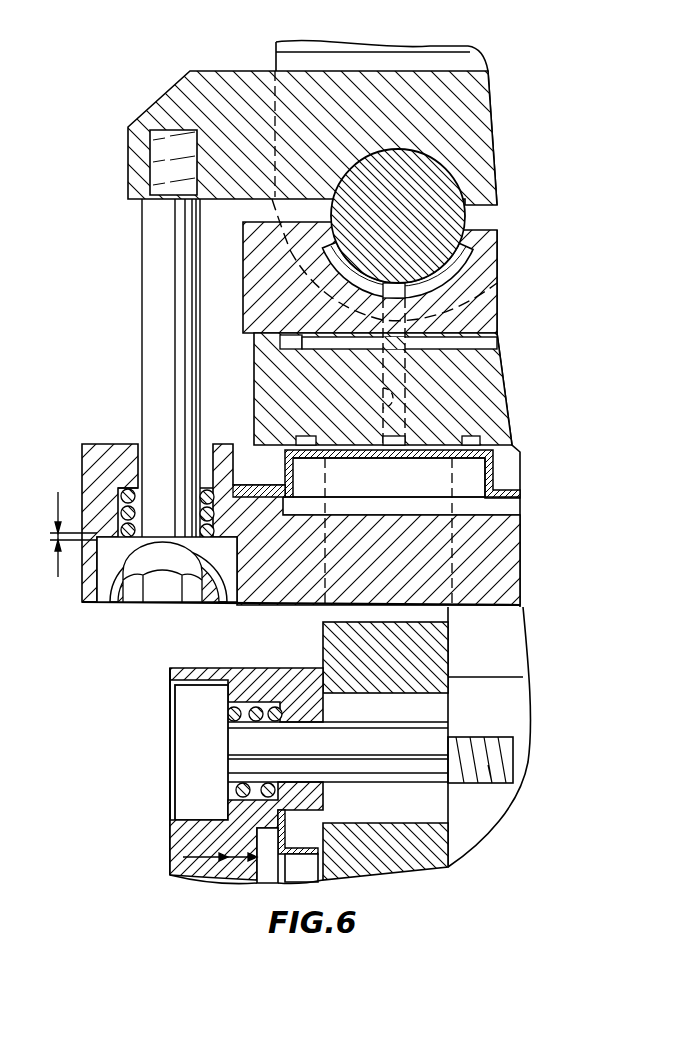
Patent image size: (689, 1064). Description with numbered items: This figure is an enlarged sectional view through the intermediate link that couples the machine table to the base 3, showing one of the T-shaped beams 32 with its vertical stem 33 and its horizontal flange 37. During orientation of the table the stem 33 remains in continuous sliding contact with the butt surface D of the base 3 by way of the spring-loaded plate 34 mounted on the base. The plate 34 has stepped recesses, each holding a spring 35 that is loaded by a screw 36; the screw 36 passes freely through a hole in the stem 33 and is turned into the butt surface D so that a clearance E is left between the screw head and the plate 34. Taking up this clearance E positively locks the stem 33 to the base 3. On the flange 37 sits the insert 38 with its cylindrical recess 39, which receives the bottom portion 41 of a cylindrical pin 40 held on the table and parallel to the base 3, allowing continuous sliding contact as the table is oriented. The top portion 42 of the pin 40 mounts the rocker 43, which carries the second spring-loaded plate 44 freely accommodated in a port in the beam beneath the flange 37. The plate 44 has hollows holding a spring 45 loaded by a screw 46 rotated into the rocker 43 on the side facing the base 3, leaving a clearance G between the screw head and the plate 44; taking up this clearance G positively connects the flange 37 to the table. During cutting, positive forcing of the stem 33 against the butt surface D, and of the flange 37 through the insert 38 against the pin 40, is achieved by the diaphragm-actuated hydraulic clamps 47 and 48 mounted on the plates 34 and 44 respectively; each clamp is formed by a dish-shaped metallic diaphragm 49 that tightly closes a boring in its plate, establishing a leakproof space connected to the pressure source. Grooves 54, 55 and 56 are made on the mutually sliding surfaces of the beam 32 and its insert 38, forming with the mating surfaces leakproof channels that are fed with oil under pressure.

The base 3 is at (512, 722).
The T-shaped beam 32 is at (435, 655).
The vertical portion (stem) 33 is at (450, 838).
The spring-loaded plate 34 is at (285, 682).
The spring 35 is at (262, 726).
The screw 36 is at (238, 762).
The horizontal portion (flange) 37 is at (473, 336).
The insert 38 is at (267, 302).
The cylindrical recess 39 is at (465, 226).
The cylindrical pin 40 is at (452, 196).
The bottom portion of pin 41 is at (492, 278).
The top portion of pin 42 is at (446, 160).
The rocker 43 is at (467, 95).
The spring-loaded plate 44 is at (258, 597).
The spring 45 is at (113, 490).
The screw 46 is at (155, 372).
The diaphragm-actuated hydraulic clamp 47 is at (288, 857).
The diaphragm-actuated hydraulic clamp 48 is at (368, 458).
The dish-shaped metallic diaphragm 49 is at (287, 820).
The groove 54 is at (447, 447).
The groove 55 is at (463, 347).
The groove 56 is at (443, 315).
The clearance G is at (57, 534).
The butt surface D is at (445, 718).
The clearance E is at (220, 844).